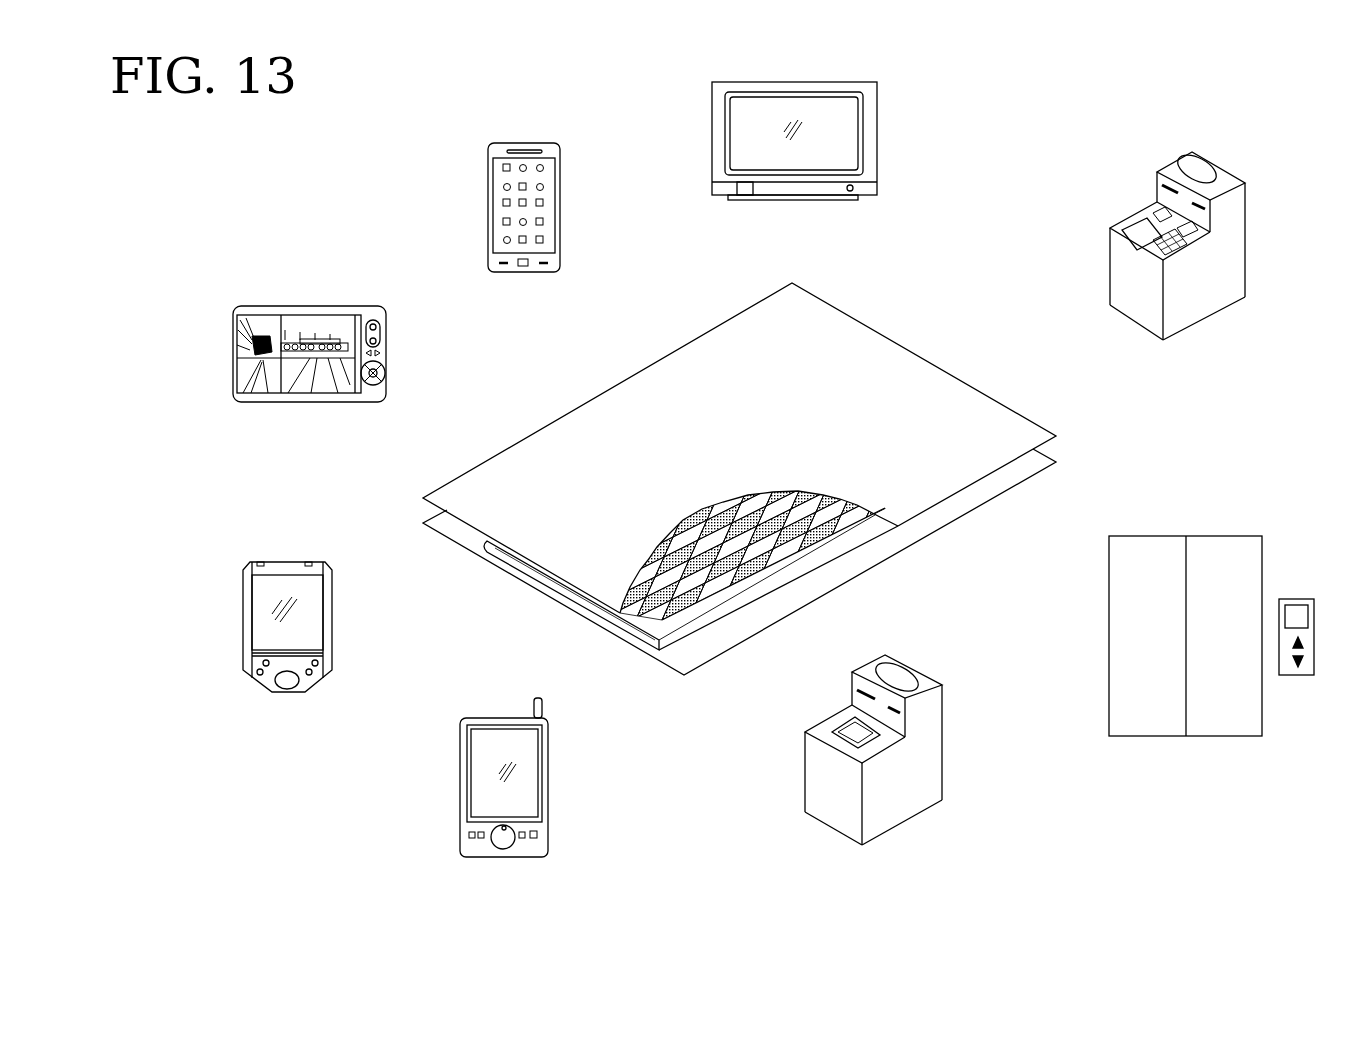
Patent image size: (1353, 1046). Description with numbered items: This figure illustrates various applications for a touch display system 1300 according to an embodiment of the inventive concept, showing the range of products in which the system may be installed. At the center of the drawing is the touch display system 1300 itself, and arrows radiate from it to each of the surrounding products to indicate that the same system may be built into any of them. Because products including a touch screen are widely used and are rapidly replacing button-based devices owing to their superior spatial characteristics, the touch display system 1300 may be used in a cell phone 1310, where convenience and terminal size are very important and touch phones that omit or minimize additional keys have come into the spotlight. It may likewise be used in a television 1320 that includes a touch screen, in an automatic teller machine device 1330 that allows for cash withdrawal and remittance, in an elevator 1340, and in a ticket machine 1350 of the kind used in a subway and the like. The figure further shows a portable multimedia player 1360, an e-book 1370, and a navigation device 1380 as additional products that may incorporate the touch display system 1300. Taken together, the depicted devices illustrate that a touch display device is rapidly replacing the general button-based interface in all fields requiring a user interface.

The touch display system 1300 is at (903, 343).
The cell phone 1310 is at (699, 336).
The television (TV) 1320 is at (792, 283).
The automatic teller machine (ATM) device 1330 is at (1004, 404).
The elevator 1340 is at (955, 522).
The ticket machine 1350 is at (808, 606).
The portable multimedia player (PMP) 1360 is at (587, 619).
The e-book 1370 is at (472, 553).
The navigation device 1380 is at (531, 432).